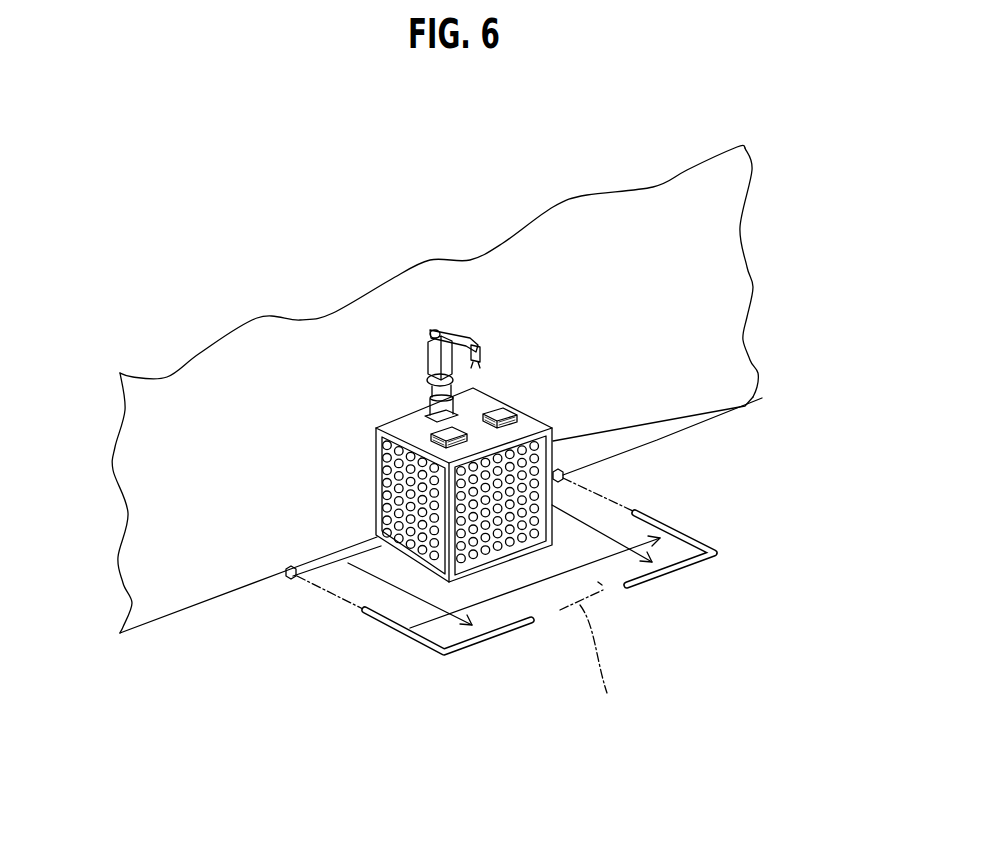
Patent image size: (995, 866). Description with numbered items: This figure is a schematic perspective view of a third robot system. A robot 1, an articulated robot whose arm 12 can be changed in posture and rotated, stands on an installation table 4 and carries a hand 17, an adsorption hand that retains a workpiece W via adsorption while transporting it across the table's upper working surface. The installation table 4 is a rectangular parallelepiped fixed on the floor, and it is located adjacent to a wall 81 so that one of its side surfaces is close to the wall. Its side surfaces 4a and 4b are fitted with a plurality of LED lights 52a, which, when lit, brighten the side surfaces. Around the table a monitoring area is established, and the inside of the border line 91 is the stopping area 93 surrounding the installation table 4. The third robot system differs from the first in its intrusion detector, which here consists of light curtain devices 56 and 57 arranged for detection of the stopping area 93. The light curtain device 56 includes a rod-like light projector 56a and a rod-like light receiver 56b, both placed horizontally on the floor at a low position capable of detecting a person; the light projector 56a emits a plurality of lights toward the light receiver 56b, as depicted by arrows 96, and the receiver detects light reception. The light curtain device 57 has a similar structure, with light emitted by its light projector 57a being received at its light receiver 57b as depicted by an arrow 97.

The robot 1 is at (447, 327).
The installation table 4 is at (465, 364).
The side surface 4a is at (377, 467).
The side surface 4b is at (550, 447).
The arm 12 is at (425, 294).
The hand 17 is at (473, 368).
The LED light 52a is at (377, 498).
The light curtain device 56 is at (476, 655).
The light projector 56a is at (288, 578).
The light receiver 56b is at (515, 630).
The light curtain device 57 is at (413, 678).
The light projector 57a is at (406, 652).
The light receiver 57b is at (692, 536).
The wall 81 is at (172, 400).
The border line 91 is at (605, 664).
The stopping area 93 is at (600, 582).
The arrows 96 is at (542, 587).
The arrow 97 is at (530, 586).
The workpiece W is at (447, 430).